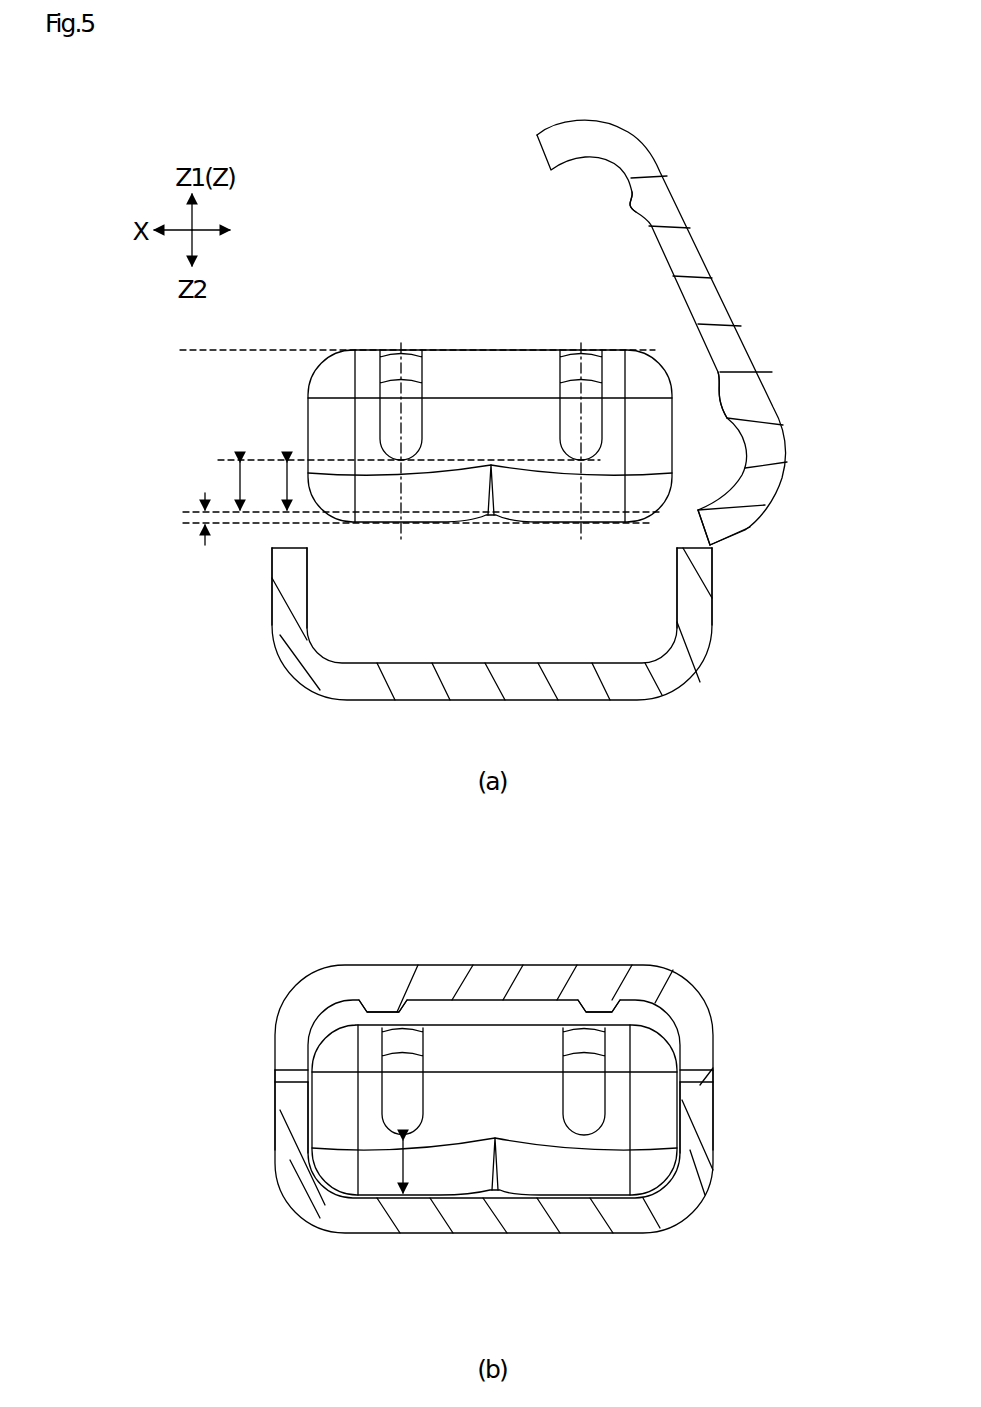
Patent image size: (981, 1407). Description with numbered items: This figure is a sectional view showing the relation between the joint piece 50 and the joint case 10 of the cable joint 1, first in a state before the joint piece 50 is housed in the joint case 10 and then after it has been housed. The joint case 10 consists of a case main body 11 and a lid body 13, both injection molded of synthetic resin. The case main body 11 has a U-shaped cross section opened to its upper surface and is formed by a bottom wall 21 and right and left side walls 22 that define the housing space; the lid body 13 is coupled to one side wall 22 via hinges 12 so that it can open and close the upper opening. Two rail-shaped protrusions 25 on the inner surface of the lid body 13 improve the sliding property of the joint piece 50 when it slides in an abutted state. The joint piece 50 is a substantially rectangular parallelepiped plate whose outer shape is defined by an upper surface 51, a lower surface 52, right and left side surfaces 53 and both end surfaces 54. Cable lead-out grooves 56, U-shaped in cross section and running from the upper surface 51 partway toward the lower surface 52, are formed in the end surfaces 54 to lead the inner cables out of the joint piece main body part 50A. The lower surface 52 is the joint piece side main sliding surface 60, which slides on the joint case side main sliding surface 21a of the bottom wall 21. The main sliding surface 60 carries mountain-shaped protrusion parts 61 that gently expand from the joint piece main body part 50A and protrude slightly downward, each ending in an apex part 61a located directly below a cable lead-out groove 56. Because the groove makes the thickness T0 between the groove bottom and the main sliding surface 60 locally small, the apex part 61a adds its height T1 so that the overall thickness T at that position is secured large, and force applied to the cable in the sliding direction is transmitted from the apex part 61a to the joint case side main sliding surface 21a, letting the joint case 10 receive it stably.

The cable joint 1 is at (768, 335).
The joint case 10 is at (708, 202).
The case main body 11 is at (278, 672).
The hinges 12 is at (715, 548).
The lid body 13 is at (732, 292).
The bottom wall 21 is at (576, 696).
The joint case side main sliding surface 21a is at (506, 660).
The side walls 22 is at (272, 602).
The rail-shaped protrusions 25 is at (633, 212).
The joint piece 50 is at (328, 342).
The joint piece main body part 50A is at (187, 350).
The upper surface 51 is at (494, 349).
The lower surface 52 is at (463, 1200).
The side surfaces 53 is at (308, 432).
The end surfaces 54 is at (470, 1000).
The cable lead-out groove 56 is at (410, 385).
The joint piece side main sliding surface 60 is at (492, 827).
The protrusion part 61 is at (446, 525).
The apex part 61a is at (400, 525).
The thickness T is at (329, 827).
The thickness T0 is at (270, 486).
The height T1 is at (205, 520).